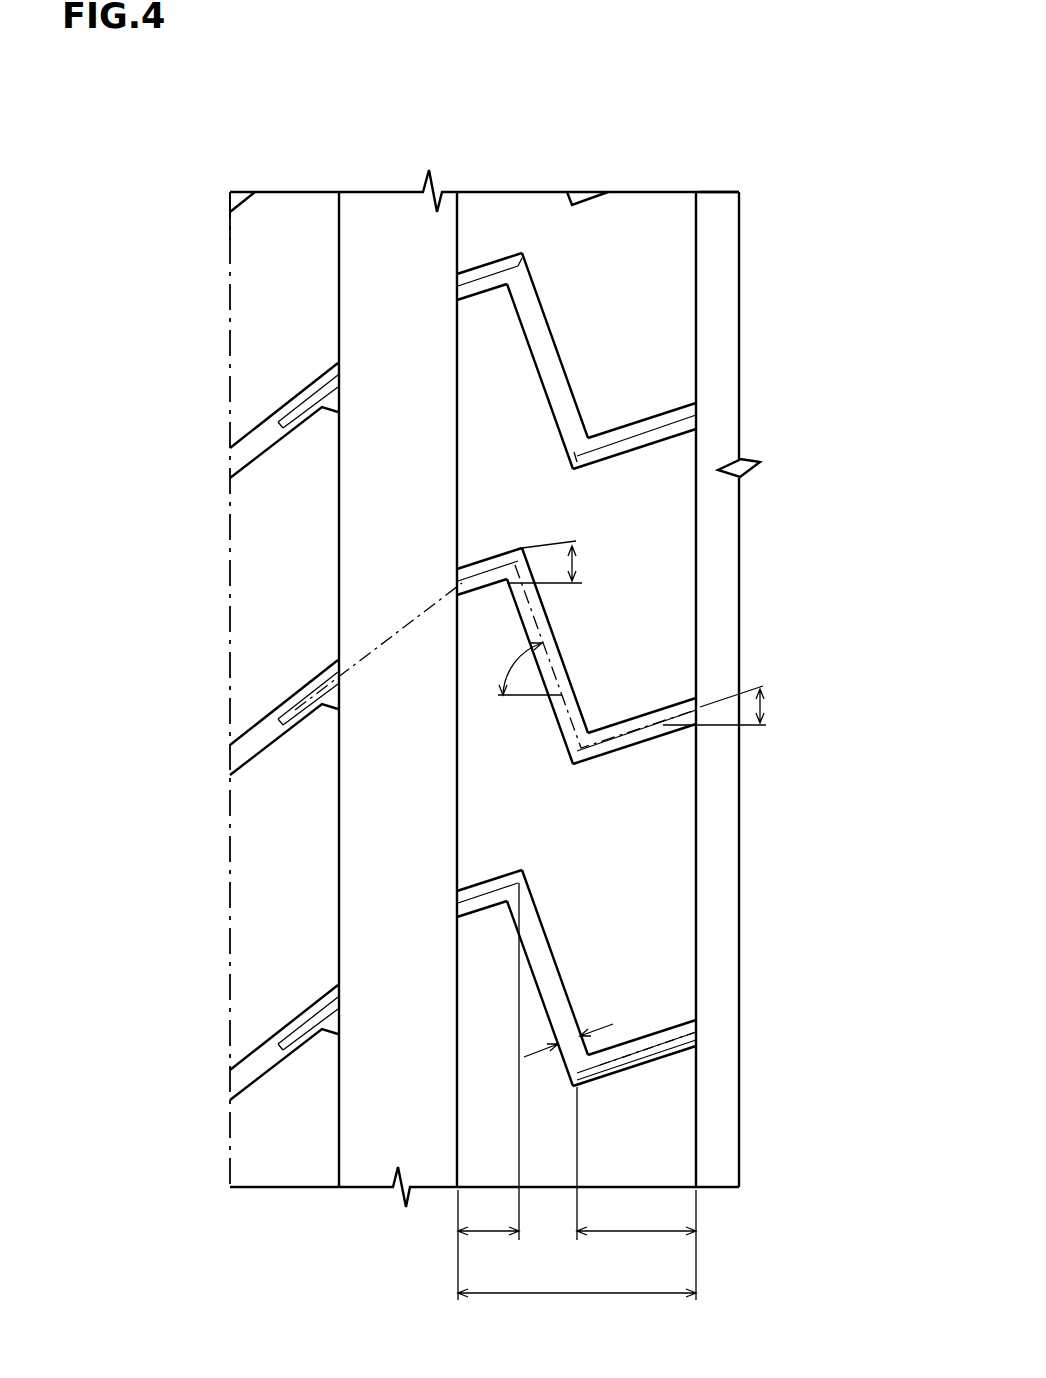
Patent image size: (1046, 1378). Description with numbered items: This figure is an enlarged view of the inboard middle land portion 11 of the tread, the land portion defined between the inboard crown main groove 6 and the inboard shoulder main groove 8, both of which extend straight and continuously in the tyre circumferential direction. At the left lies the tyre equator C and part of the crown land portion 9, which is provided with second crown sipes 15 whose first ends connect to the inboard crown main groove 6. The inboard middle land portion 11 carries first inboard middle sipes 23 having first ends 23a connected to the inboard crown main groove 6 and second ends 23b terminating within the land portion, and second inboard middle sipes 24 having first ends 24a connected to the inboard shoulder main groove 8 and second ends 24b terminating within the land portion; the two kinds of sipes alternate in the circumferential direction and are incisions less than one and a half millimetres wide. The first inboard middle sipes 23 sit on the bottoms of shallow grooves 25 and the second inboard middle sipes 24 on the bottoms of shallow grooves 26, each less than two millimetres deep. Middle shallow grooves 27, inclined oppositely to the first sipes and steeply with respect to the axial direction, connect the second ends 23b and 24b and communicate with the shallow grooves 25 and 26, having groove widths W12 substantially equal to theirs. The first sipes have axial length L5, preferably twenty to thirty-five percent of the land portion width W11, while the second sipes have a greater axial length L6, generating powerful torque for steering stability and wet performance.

The tyre equator C is at (230, 188).
The crown land portion 9 is at (282, 230).
The inboard crown main groove 6 is at (386, 233).
The inboard middle land portion 11 is at (623, 243).
The inboard shoulder main groove 8 is at (715, 223).
The first inboard middle sipe 23 is at (487, 273).
The first end of first inboard middle sipe 23a is at (455, 289).
The second end of first inboard middle sipe 23b is at (531, 268).
The middle shallow groove 27 is at (548, 352).
The second inboard middle sipe 24 is at (645, 430).
The first end of second inboard middle sipe 24a is at (700, 413).
The second end of second inboard middle sipe 24b is at (570, 457).
The shallow groove 26 is at (632, 1060).
The second crown sipe 15 is at (290, 695).
The shallow groove 25 is at (483, 907).
The groove width W12 is at (567, 1037).
The axial length of first inboard middle sipe L5 is at (488, 1091).
The axial length of second inboard middle sipe L6 is at (636, 1193).
The width of inboard middle land portion W11 is at (577, 1308).